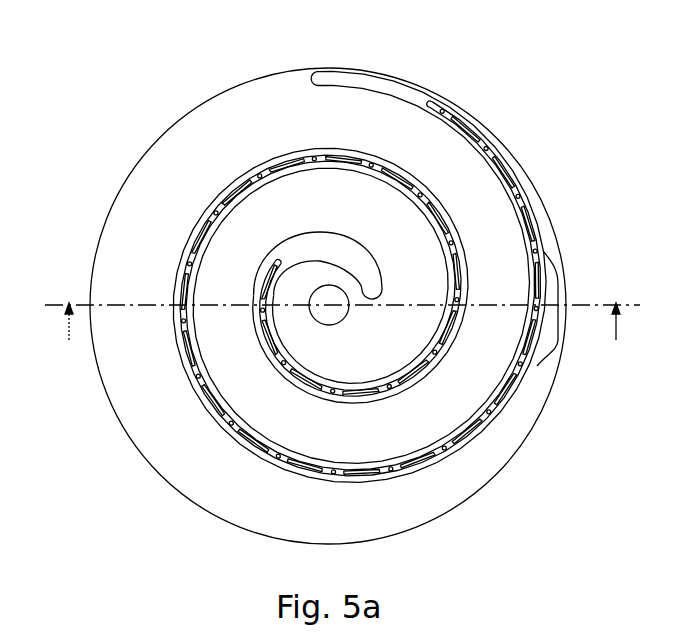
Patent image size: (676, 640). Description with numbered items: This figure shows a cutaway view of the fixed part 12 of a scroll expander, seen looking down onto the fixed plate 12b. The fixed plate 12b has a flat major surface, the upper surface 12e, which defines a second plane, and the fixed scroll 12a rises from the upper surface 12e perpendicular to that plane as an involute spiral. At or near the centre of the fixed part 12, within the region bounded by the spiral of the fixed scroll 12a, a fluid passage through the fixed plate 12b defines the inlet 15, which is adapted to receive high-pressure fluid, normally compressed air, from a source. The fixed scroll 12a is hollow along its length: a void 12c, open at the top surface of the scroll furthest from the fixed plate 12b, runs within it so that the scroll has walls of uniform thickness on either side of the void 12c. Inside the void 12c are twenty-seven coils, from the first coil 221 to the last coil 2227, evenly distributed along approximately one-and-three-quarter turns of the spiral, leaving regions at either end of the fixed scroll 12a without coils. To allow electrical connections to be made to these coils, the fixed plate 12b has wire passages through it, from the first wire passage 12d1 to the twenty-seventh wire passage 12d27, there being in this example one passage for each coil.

The fixed part 12 is at (100, 80).
The fixed scroll 12a is at (345, 70).
The fixed plate 12b is at (521, 446).
The void 12c is at (439, 97).
The wire passage 12d1 is at (258, 293).
The wire passage 12d27 is at (500, 107).
The upper surface 12e is at (132, 348).
The inlet 15 is at (341, 316).
The coil 221 is at (258, 335).
The coil 2227 is at (514, 148).